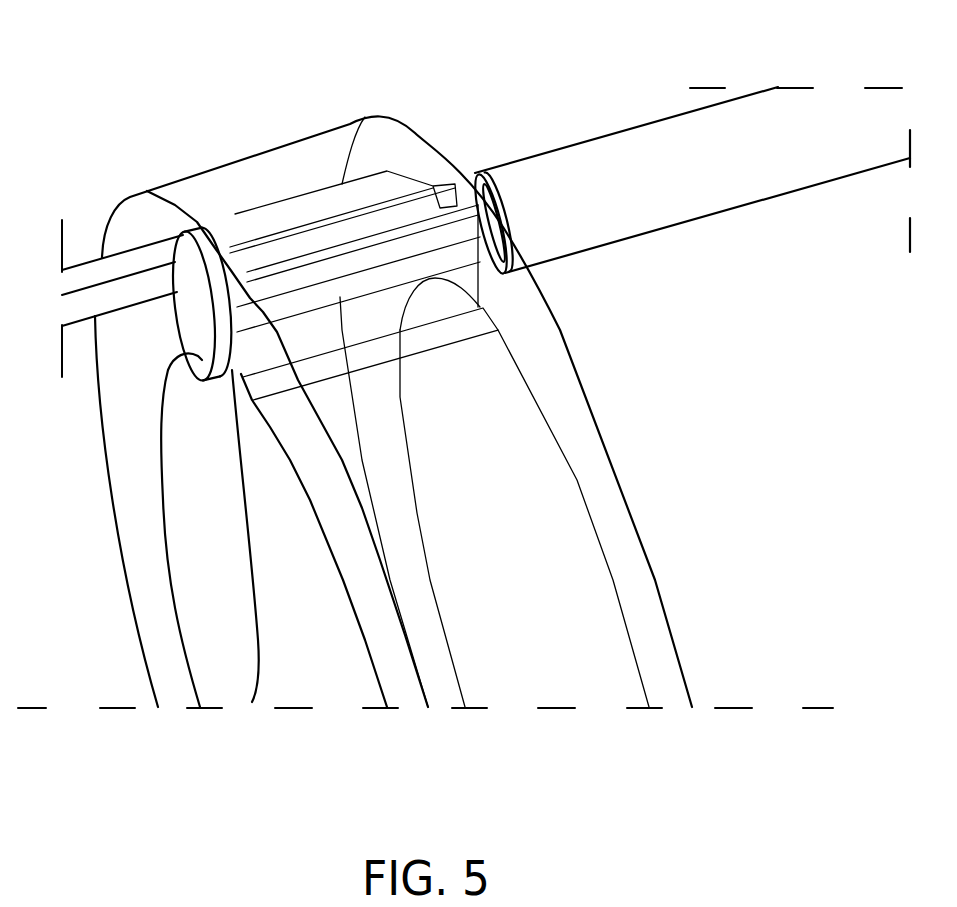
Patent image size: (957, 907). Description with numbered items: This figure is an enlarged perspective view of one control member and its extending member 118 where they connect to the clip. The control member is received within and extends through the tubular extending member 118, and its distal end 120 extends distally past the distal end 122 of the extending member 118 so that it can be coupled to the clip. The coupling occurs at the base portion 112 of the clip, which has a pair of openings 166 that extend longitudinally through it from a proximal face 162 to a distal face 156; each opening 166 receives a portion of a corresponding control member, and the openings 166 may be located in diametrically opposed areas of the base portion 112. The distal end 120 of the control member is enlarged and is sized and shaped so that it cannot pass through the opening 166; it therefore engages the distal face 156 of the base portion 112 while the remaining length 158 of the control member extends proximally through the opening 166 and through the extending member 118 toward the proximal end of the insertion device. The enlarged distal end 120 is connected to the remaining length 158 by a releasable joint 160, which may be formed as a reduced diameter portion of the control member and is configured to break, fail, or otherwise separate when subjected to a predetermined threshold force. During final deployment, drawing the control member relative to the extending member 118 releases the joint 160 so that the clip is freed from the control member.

The base portion 112 is at (577, 515).
The extending member 118 is at (650, 147).
The distal end 120 is at (252, 702).
The distal end 122 is at (522, 187).
The distal face 156 is at (132, 477).
The remaining length 158 is at (337, 267).
The releasable joint 160 is at (247, 263).
The proximal face 162 is at (582, 433).
The opening 166 is at (365, 223).